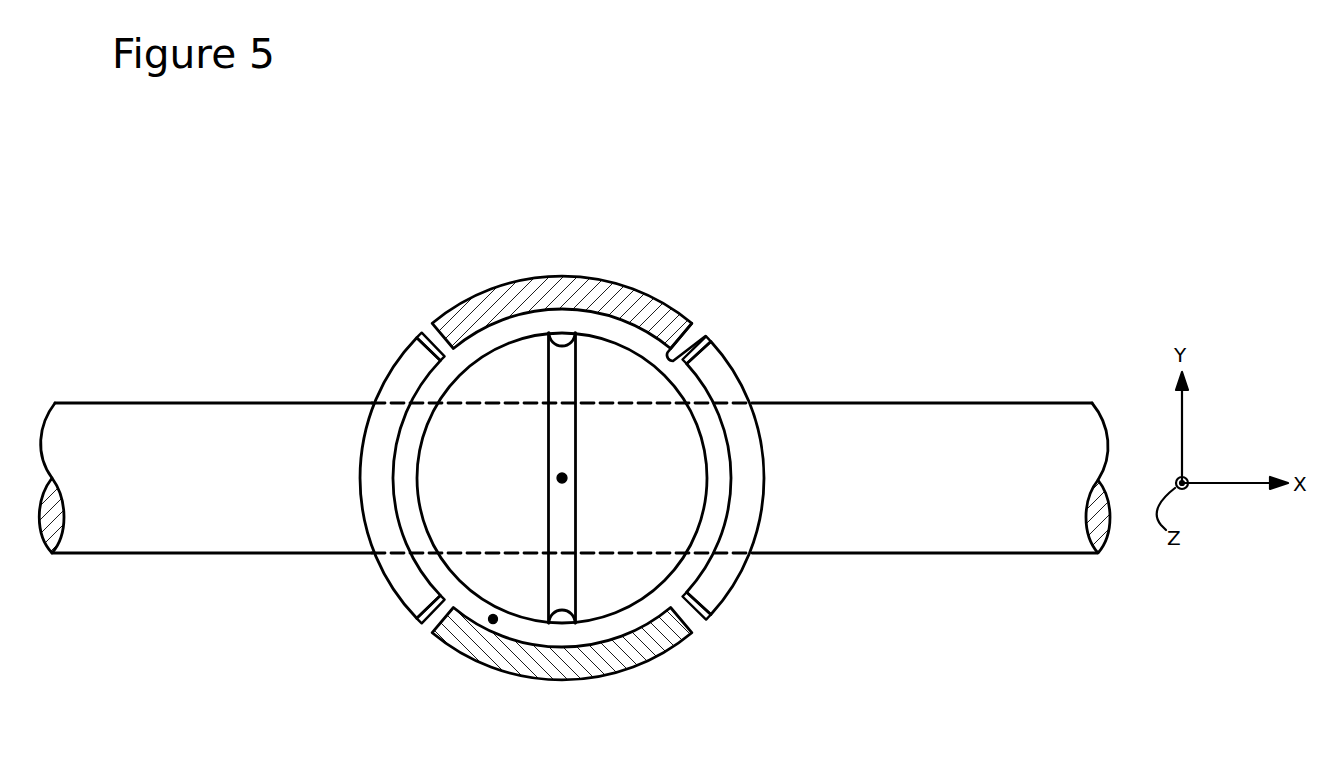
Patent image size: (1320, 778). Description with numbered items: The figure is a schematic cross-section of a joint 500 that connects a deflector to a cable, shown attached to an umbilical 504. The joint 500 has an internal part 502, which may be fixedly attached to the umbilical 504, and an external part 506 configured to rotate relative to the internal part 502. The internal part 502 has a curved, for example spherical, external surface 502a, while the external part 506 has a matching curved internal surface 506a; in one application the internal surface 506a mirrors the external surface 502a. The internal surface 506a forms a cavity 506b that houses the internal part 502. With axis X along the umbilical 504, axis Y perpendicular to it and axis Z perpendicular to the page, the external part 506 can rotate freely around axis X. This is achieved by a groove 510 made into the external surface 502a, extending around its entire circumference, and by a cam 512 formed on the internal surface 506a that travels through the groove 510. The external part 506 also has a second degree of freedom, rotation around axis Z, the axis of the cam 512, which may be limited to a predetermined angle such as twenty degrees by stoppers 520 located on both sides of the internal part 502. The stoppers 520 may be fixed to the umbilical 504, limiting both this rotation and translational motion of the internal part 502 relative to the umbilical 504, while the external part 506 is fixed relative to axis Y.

The joint 500 is at (590, 152).
The internal part 502 is at (643, 577).
The external surface 502a is at (699, 427).
The umbilical 504 is at (968, 432).
The external part 506 is at (648, 296).
The internal surface 506a is at (700, 338).
The cavity 506b is at (489, 624).
The groove 510 is at (562, 478).
The cam 512 is at (567, 478).
The stoppers 520 is at (397, 367).